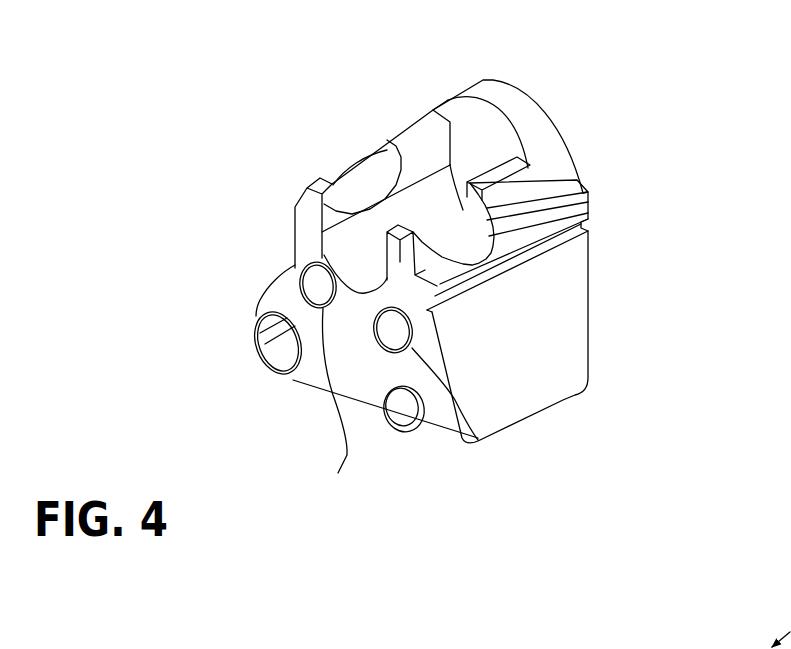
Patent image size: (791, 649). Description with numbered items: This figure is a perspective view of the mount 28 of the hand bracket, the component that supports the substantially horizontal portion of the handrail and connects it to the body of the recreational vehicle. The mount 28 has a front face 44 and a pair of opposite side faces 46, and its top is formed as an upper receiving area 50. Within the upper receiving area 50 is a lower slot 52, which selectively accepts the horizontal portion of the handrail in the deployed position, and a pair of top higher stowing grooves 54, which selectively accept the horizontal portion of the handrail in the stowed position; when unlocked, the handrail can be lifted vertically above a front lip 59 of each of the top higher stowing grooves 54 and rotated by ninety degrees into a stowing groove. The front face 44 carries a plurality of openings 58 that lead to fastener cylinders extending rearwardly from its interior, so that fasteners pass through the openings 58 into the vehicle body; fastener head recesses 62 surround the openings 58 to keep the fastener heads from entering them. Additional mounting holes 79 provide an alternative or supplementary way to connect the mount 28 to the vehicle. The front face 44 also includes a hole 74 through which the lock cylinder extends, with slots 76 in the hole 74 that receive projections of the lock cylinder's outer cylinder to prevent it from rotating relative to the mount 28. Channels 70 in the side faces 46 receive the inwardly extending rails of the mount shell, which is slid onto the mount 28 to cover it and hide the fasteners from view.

The mount 28 is at (148, 322).
The front face 44 is at (335, 387).
The side faces 46 is at (530, 372).
The upper receiving area 50 is at (433, 106).
The lower slot 52 is at (358, 255).
The top higher stowing grooves 54 is at (352, 178).
The openings 58 is at (305, 288).
The front lip 59 is at (320, 186).
The fastener head recesses 62 is at (318, 392).
The channels 70 is at (552, 242).
The hole 74 is at (262, 367).
The slots 76 is at (262, 330).
The additional mounting holes 79 is at (681, 638).